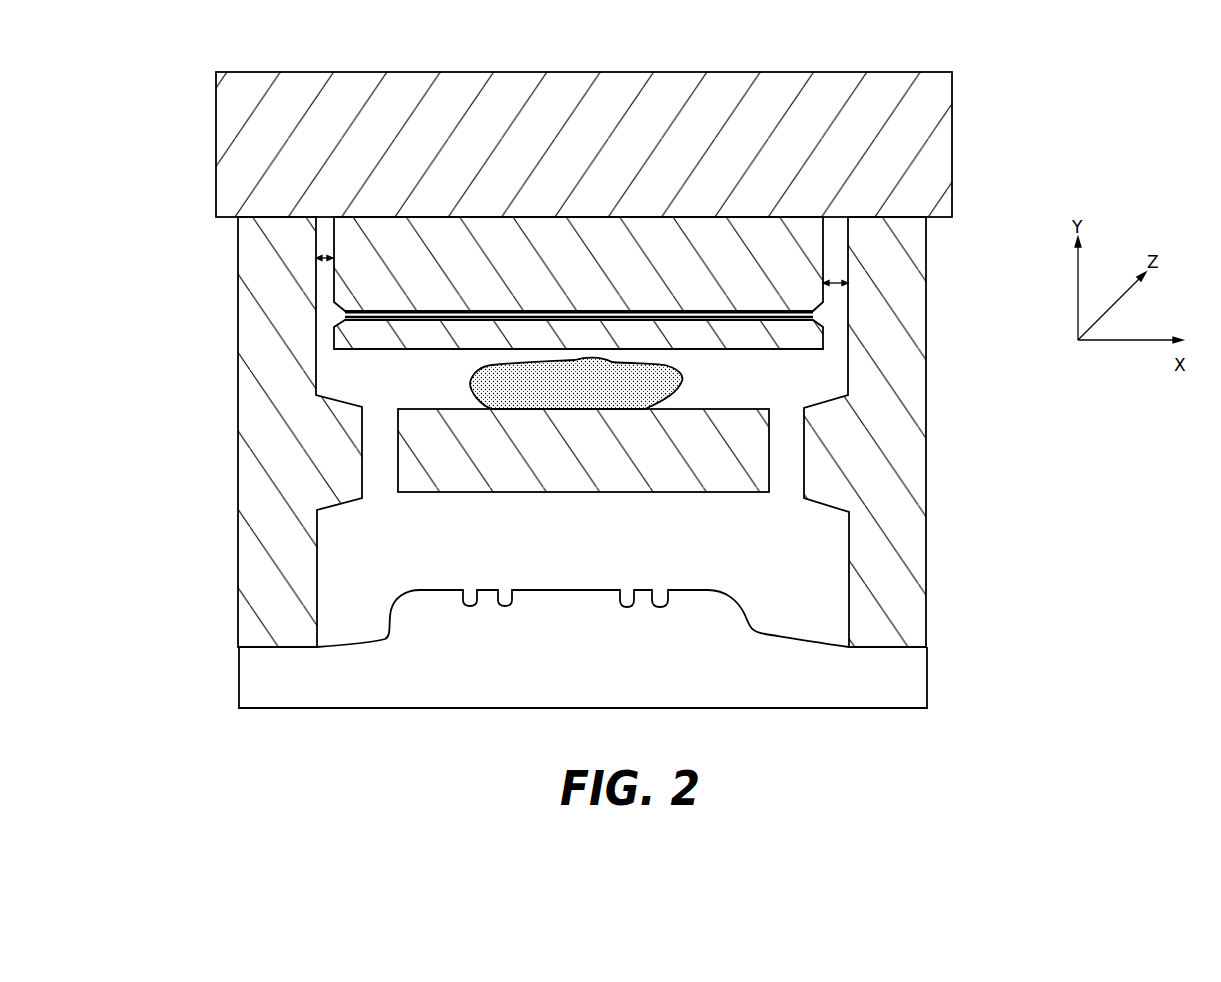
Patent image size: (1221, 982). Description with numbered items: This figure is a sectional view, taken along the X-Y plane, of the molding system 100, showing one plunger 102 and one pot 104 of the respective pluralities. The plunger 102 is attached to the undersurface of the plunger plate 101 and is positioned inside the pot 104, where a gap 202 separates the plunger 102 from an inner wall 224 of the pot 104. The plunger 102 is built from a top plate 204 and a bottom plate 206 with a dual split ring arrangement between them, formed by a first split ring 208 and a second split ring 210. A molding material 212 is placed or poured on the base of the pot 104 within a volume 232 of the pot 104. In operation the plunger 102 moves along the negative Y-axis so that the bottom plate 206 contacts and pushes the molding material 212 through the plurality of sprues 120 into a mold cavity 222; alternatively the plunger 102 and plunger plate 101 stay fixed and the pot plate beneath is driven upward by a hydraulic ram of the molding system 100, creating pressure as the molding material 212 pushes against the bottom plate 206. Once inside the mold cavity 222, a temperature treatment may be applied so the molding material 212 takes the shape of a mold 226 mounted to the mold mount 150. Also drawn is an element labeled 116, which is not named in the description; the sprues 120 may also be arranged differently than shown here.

The molding system 100 is at (270, 43).
The plunger plate 101 is at (602, 126).
The plunger 102 is at (616, 217).
The pot 104 is at (262, 292).
The substrate support 116 is at (688, 400).
The plurality of sprues 120 is at (372, 416).
The mold mount 150 is at (900, 674).
The gap 202 is at (323, 258).
The top plate 204 is at (630, 268).
The bottom plate 206 is at (682, 342).
The first split ring 208 is at (430, 311).
The second split ring 210 is at (448, 321).
The molding material 212 is at (590, 398).
The mold cavity 222 is at (556, 570).
The inner wall 224 is at (846, 329).
The mold 226 is at (708, 638).
The volume 232 is at (372, 384).